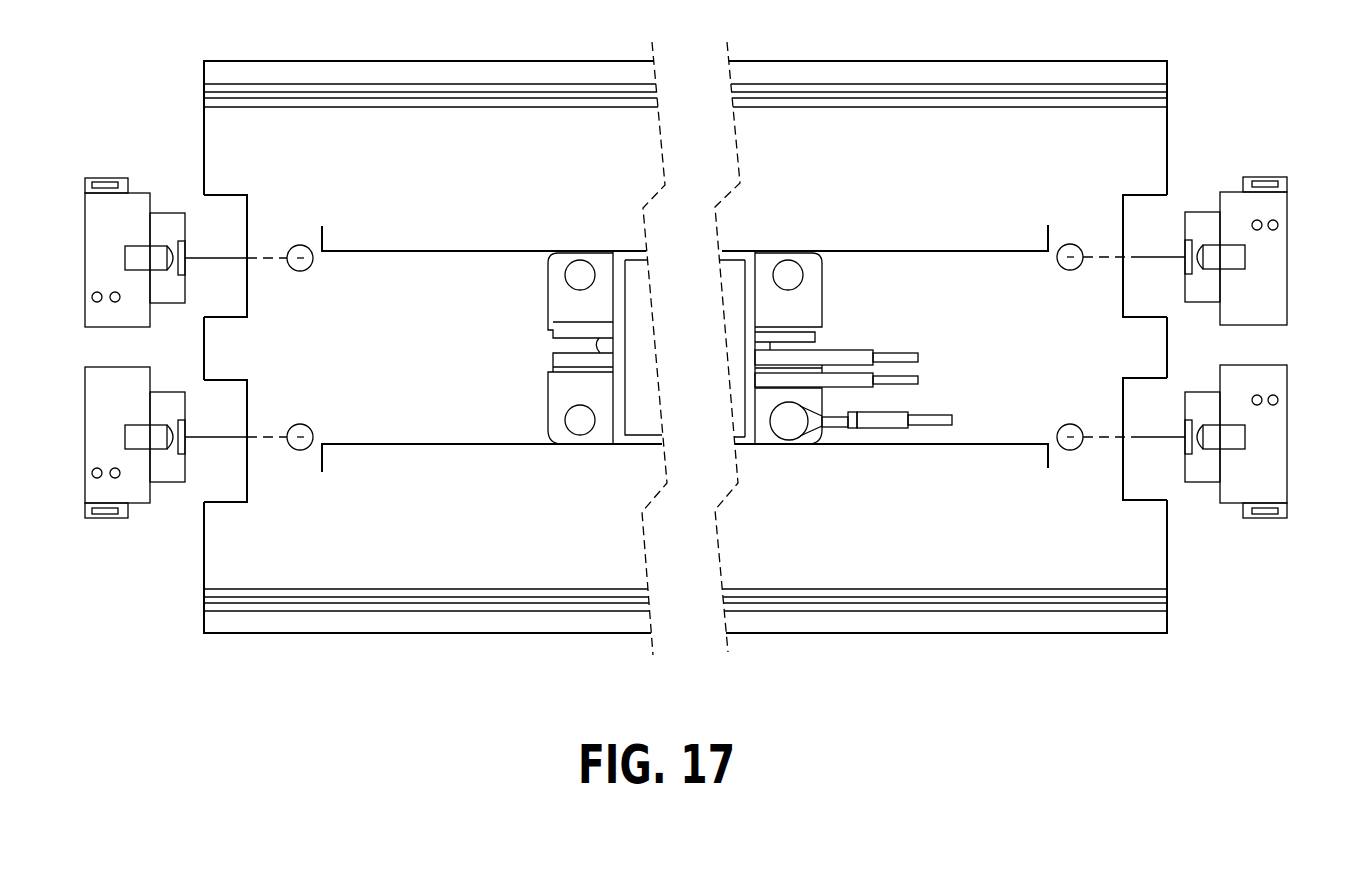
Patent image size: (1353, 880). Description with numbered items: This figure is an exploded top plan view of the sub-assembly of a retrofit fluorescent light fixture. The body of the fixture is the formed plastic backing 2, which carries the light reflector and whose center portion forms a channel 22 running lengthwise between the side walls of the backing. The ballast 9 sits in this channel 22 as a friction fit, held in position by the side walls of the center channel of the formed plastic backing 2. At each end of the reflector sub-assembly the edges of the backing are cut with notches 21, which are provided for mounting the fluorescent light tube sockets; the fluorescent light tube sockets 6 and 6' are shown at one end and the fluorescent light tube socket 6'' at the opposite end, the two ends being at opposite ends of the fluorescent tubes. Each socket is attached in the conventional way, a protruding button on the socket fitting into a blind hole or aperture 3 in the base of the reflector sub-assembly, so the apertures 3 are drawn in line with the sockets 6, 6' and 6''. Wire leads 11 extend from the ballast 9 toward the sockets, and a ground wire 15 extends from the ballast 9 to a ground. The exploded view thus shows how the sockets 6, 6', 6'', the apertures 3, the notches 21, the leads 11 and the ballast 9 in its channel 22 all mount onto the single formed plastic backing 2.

The formed plastic backing 2 is at (861, 189).
The blind hole or aperture 3 is at (302, 244).
The fluorescent light tube socket 6 is at (161, 442).
The fluorescent light tube socket 6' is at (689, 252).
The fluorescent light tube socket 6'' is at (1218, 441).
The ballast 9 is at (547, 298).
The contact 11 is at (923, 352).
The ground wire 15 is at (897, 429).
The notches 21 is at (247, 272).
The channel 22 is at (441, 424).